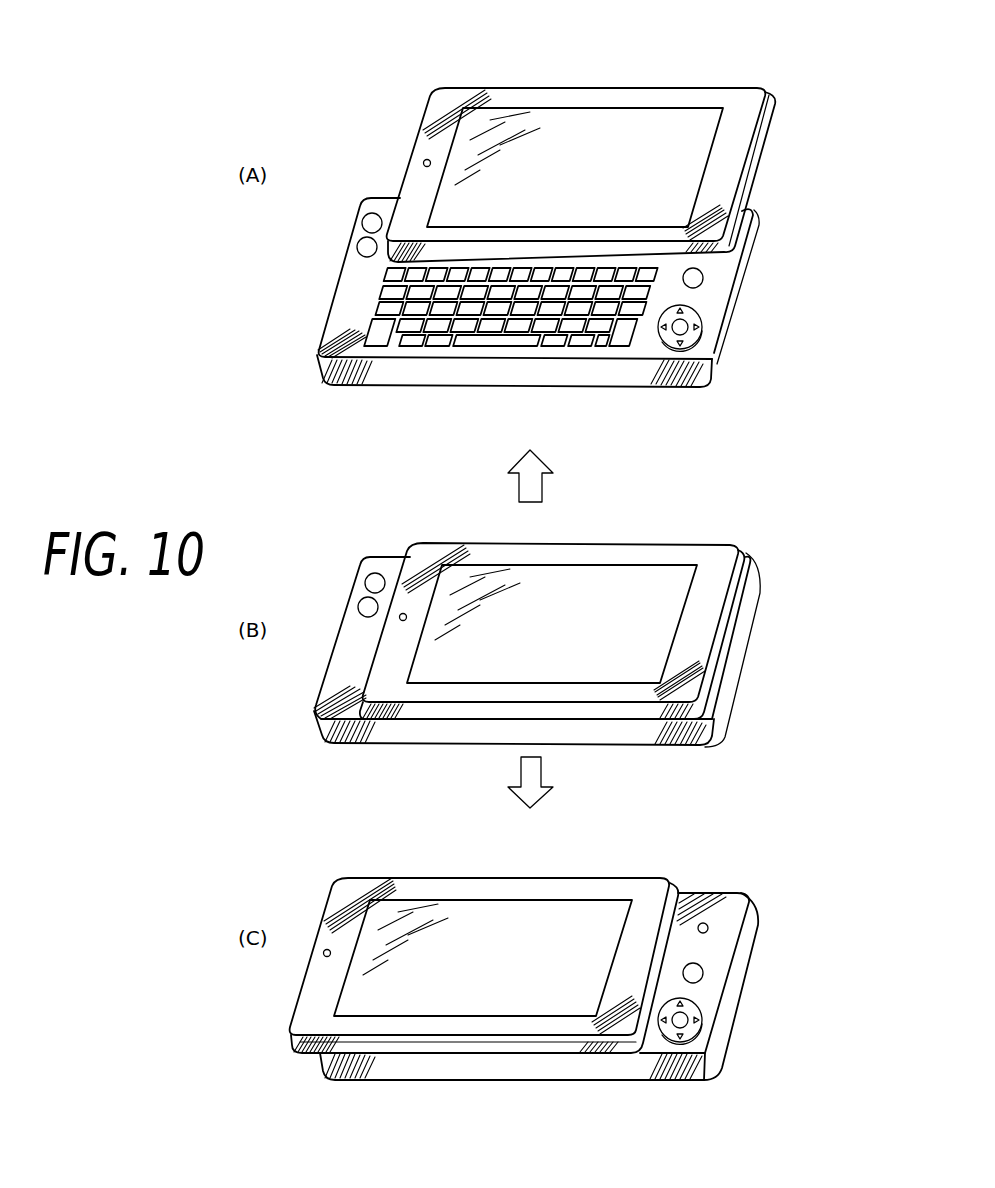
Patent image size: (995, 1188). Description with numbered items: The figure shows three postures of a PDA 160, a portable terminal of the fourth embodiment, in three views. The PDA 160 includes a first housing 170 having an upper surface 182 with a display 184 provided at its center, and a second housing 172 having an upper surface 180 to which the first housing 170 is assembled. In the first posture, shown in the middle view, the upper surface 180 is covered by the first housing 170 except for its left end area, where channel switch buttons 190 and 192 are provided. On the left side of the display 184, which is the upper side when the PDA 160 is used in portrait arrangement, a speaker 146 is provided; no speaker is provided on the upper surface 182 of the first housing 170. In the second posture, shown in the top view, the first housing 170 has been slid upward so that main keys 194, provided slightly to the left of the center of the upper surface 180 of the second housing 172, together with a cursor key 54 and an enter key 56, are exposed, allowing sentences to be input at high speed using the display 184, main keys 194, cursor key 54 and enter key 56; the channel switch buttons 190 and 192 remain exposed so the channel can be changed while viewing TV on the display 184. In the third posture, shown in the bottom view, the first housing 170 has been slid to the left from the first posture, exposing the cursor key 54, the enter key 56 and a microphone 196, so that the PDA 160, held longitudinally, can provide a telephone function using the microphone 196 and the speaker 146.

The PDA 160 is at (532, 63).
The first housing 170 is at (750, 177).
The second housing 172 is at (602, 377).
The upper surface 180 is at (338, 337).
The upper surface 182 is at (642, 98).
The display 184 is at (573, 123).
The channel switch button 190 is at (369, 213).
The channel switch button 192 is at (360, 239).
The main keys 194 is at (483, 346).
The microphone 196 is at (706, 923).
The speaker 146 is at (425, 160).
The enter key 56 is at (702, 275).
The cursor key 54 is at (697, 308).